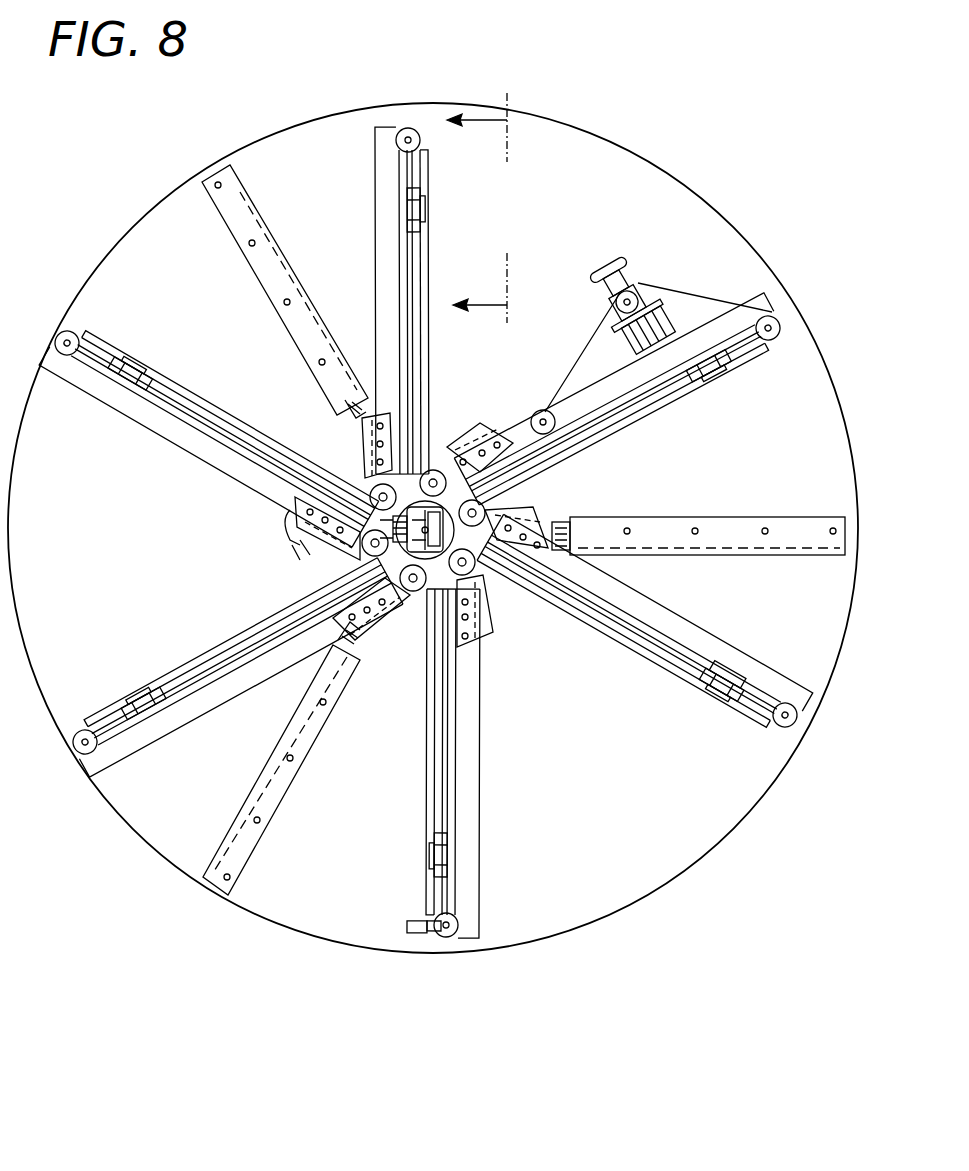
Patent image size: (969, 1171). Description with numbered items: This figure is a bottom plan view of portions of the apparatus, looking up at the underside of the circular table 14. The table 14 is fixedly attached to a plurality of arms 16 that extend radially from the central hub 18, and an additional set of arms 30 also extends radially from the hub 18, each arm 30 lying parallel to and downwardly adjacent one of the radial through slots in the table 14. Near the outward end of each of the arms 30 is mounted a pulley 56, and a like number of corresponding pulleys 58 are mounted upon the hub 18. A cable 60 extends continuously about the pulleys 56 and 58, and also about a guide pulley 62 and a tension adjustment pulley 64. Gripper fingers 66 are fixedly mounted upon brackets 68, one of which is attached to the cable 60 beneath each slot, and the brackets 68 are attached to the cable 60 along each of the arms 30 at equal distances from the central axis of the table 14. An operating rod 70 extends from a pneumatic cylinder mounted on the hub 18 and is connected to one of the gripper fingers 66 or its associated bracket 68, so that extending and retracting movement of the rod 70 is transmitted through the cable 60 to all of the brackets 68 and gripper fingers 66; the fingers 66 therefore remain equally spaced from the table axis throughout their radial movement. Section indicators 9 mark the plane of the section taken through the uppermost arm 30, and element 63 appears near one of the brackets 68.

The section line 9- 9 is at (488, 213).
The circular table 14 is at (665, 840).
The arms 16 is at (262, 280).
The hub 18 is at (500, 488).
The arms 30 is at (380, 188).
The pulley 56 is at (421, 142).
The pulleys 58 is at (366, 445).
The cable 60 is at (596, 335).
The guide pulley 62 is at (545, 410).
The slide block 63 is at (740, 680).
The tension adjustment pulley 64 is at (634, 288).
The gripper fingers 66 is at (430, 206).
The brackets 68 is at (420, 196).
The operating rod 70 is at (428, 272).